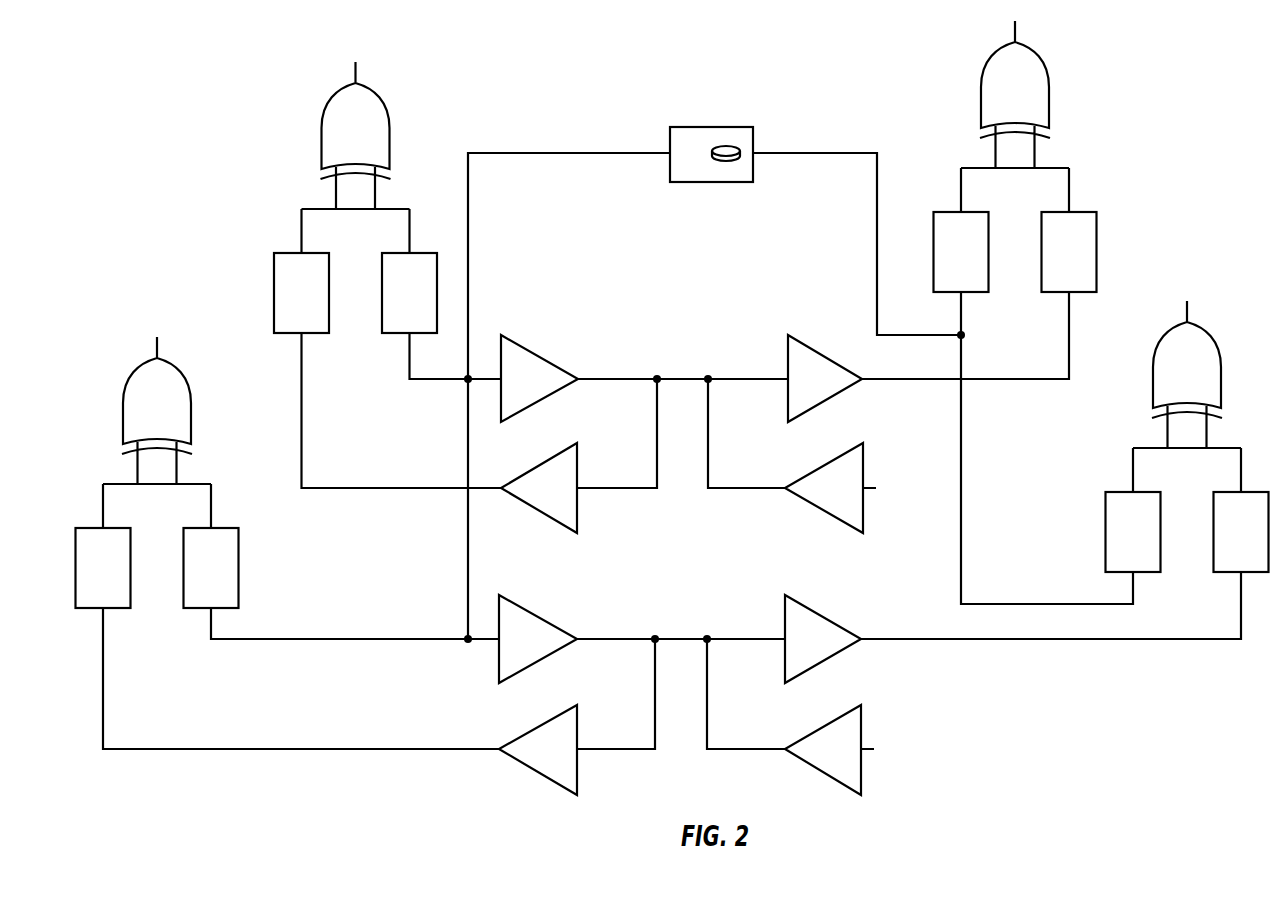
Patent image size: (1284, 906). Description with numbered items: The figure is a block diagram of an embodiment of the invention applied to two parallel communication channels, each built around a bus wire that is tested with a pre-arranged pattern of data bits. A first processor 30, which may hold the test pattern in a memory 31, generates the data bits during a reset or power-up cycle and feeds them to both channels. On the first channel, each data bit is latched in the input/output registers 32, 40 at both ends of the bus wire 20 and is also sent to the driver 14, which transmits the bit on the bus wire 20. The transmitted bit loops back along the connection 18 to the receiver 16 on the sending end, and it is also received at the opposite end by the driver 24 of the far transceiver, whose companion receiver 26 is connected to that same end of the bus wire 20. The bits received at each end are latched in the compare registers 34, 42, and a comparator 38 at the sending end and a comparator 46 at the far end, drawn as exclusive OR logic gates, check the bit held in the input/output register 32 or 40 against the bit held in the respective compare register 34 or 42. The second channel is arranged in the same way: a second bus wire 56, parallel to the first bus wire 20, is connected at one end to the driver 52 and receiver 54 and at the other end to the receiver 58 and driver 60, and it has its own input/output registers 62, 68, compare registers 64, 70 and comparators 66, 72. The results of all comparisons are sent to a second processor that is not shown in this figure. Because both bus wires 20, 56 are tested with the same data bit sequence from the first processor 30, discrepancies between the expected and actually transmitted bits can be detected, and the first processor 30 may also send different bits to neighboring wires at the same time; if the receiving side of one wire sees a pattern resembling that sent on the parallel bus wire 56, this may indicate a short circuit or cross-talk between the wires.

The driver 14 is at (511, 390).
The receiver 16 is at (535, 499).
The connection 18 is at (603, 490).
The bus wire 20 is at (687, 371).
The driver 24 is at (796, 390).
The receiver 26 is at (820, 499).
The first processor 30 is at (681, 127).
The memory 31 is at (728, 148).
The input/output register 32 is at (424, 302).
The compare register 34 is at (316, 302).
The comparator 38 is at (370, 137).
The input/output register 40 is at (947, 261).
The compare register 42 is at (1055, 261).
The comparator 46 is at (1001, 101).
The driver 52 is at (510, 650).
The receiver 54 is at (533, 760).
The second bus wire 56 is at (686, 632).
The receiver 58 is at (794, 650).
The driver 60 is at (818, 760).
The input/output register 62 is at (197, 577).
The compare register 64 is at (89, 577).
The comparator 66 is at (143, 417).
The input/output register 68 is at (1119, 541).
The compare register 70 is at (1227, 541).
The comparator 72 is at (1173, 381).